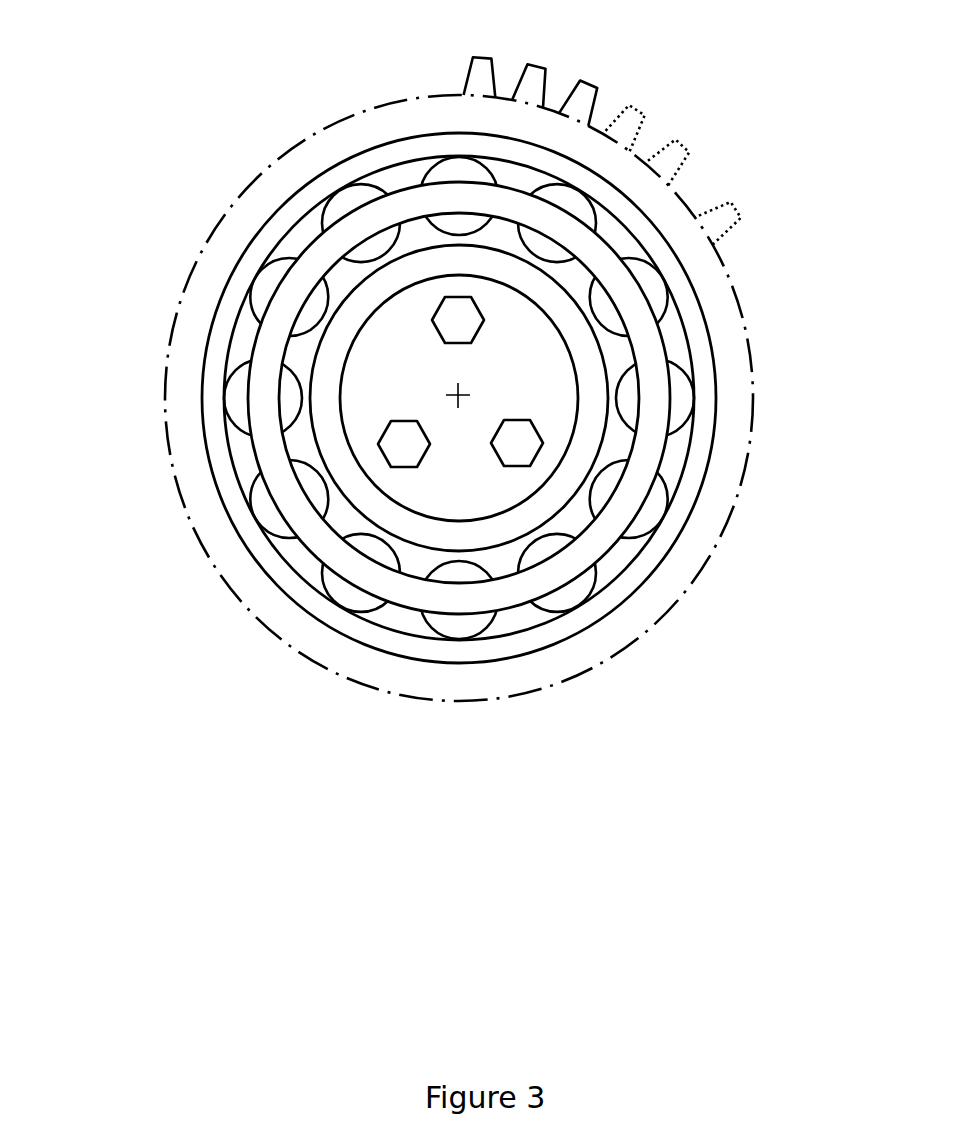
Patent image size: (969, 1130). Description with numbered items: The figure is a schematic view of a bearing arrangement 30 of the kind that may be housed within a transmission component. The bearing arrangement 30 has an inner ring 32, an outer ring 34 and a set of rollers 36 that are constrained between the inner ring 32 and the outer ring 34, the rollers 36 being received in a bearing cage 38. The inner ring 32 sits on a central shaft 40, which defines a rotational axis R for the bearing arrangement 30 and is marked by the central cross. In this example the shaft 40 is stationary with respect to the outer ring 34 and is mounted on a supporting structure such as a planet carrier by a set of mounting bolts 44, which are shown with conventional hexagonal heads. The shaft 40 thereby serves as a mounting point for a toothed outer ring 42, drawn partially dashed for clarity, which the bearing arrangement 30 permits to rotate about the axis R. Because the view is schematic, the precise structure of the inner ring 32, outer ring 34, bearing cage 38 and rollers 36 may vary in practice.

The bearing arrangement 30 is at (96, 70).
The inner ring 32 is at (603, 396).
The outer ring 34 is at (660, 541).
The rollers 36 is at (612, 657).
The bearing cage 38 is at (263, 411).
The central shaft 40 is at (357, 441).
The toothed outer ring 42 is at (719, 252).
The mounting bolts 44 is at (407, 424).